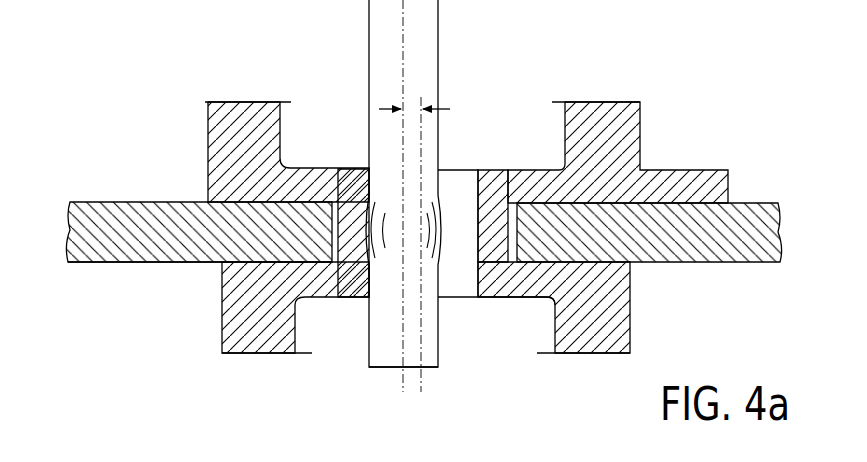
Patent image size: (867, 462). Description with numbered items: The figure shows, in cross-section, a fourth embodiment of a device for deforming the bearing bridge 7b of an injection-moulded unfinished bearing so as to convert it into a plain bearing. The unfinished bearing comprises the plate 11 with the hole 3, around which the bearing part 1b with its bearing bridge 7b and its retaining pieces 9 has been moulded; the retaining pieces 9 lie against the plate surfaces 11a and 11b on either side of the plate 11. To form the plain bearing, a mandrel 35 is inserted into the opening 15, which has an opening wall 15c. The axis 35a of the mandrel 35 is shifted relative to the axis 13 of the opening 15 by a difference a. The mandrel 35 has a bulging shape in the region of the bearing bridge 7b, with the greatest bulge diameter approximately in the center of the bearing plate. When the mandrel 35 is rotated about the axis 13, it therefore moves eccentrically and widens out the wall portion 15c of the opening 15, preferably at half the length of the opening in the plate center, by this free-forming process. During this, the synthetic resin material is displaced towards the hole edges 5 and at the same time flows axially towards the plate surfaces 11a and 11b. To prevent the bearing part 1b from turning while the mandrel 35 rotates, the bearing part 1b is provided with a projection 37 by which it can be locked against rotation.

The bearing part 1b is at (667, 131).
The hole 3 is at (338, 168).
The hole edges 5 is at (506, 238).
The bearing bridge 7b is at (478, 212).
The retaining pieces 9 is at (210, 152).
The plate 11 is at (752, 205).
The plate surface 11a is at (99, 200).
The plate surface 11b is at (105, 265).
The axis of the opening 13 is at (423, 370).
The opening 15 is at (458, 167).
The opening wall 15c is at (480, 263).
The mandrel 35 is at (425, 50).
The axis of the mandrel 35a is at (401, 370).
The projection 37 is at (685, 178).
The difference a is at (410, 107).